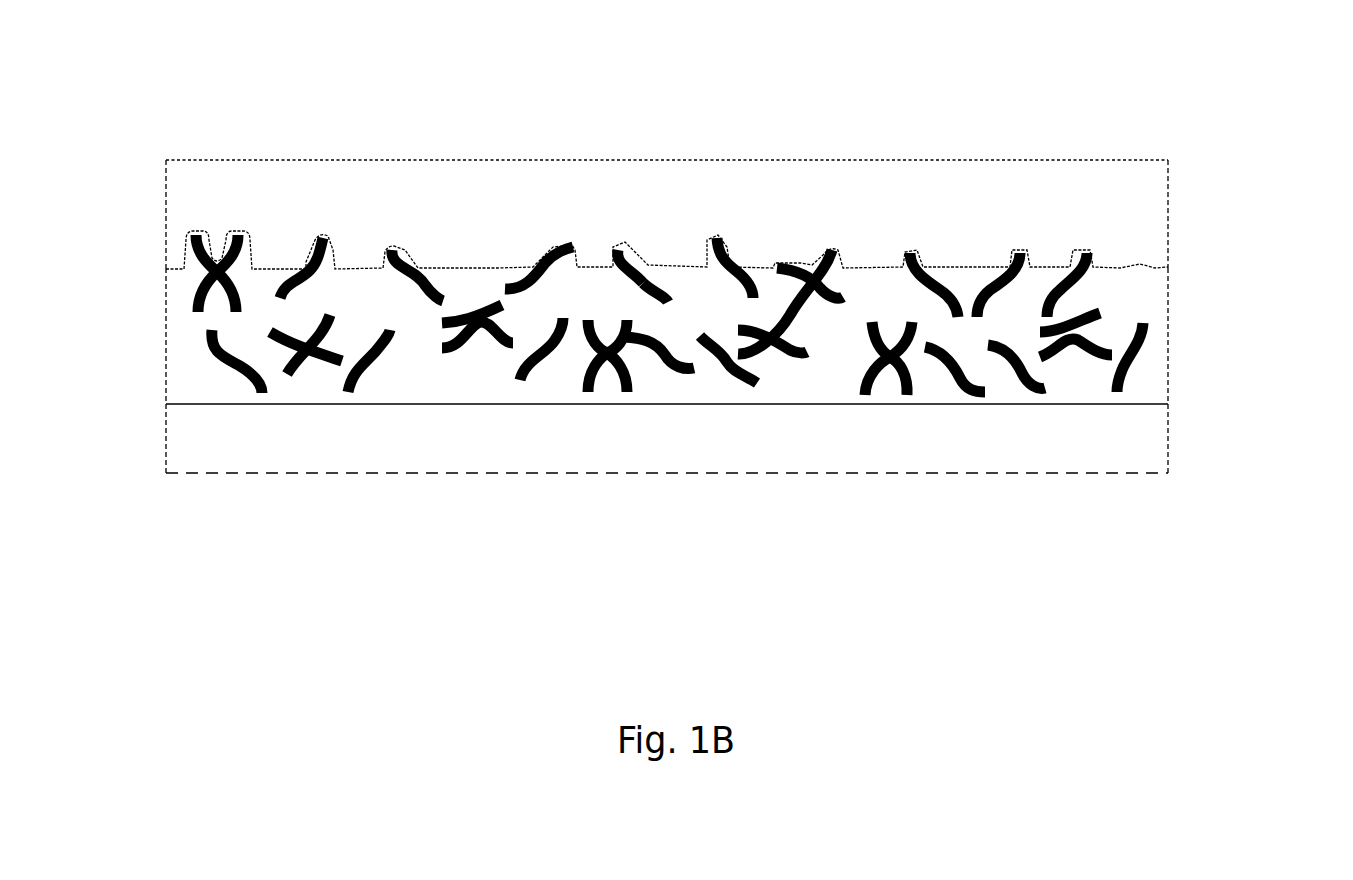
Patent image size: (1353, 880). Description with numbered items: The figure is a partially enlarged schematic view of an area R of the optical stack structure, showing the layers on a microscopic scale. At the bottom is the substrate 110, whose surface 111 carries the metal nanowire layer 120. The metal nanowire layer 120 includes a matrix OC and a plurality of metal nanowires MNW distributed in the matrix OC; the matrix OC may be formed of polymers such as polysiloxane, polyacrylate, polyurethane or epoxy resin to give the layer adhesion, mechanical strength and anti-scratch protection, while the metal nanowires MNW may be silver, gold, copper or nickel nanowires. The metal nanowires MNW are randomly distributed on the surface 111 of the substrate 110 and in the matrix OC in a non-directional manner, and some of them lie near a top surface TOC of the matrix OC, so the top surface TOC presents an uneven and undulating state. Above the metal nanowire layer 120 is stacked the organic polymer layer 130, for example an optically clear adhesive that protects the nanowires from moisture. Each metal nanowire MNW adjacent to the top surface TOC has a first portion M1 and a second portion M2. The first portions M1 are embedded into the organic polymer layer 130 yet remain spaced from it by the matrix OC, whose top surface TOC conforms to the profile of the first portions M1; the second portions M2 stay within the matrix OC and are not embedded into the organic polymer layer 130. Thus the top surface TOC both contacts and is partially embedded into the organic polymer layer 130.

The area R is at (150, 73).
The organic polymer layer 130 is at (1162, 208).
The metal nanowire layer 120 is at (1268, 307).
The substrate 110 is at (1162, 436).
The surface 111 is at (1071, 412).
The metal nanowires MNW is at (705, 92).
The first portion M1 is at (624, 242).
The second portion M2 is at (663, 292).
The matrix OC is at (1155, 357).
The top surface of the matrix TOC is at (873, 255).